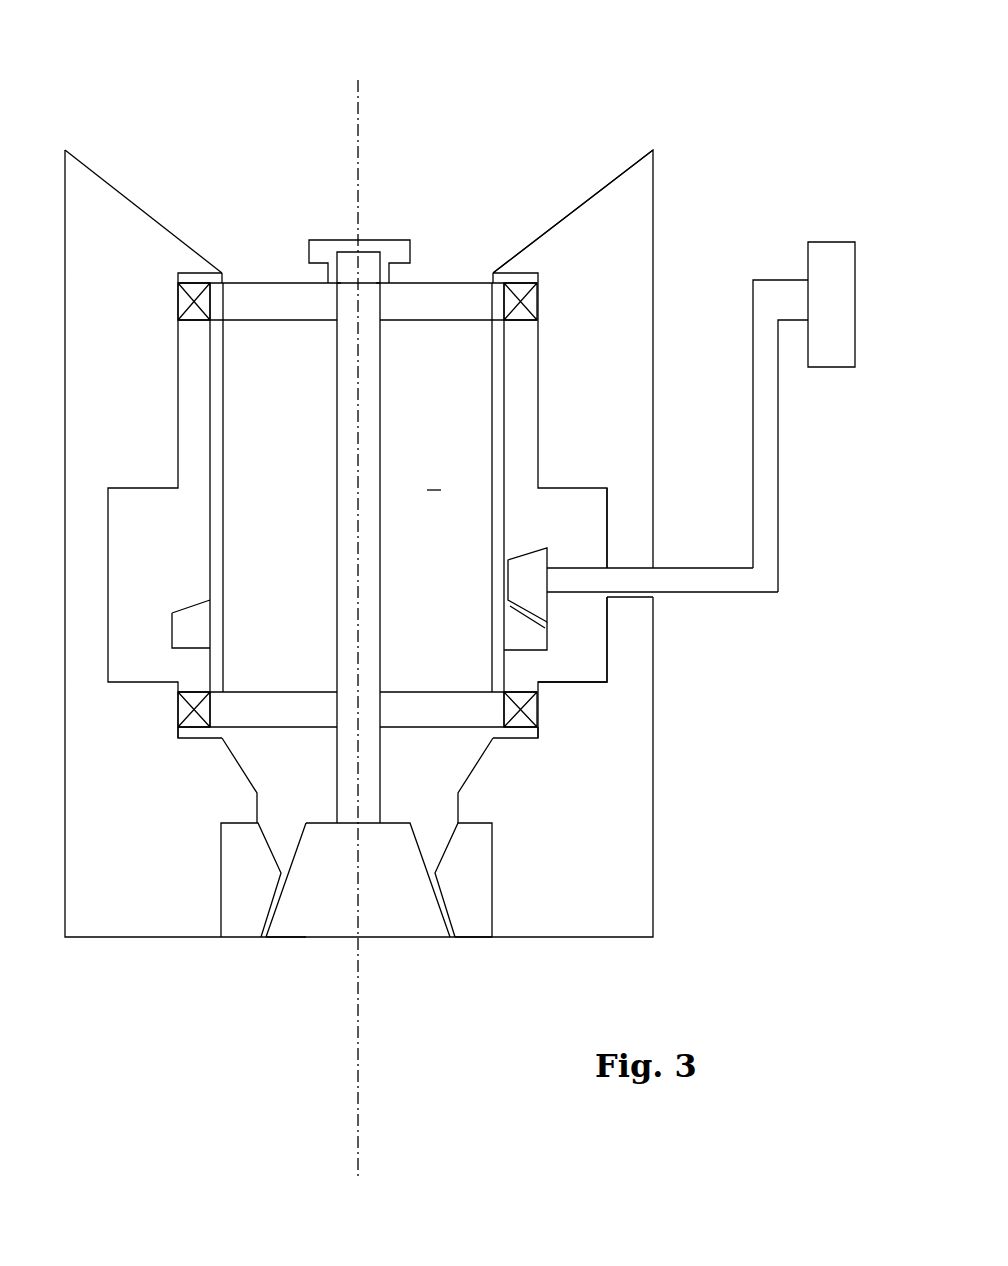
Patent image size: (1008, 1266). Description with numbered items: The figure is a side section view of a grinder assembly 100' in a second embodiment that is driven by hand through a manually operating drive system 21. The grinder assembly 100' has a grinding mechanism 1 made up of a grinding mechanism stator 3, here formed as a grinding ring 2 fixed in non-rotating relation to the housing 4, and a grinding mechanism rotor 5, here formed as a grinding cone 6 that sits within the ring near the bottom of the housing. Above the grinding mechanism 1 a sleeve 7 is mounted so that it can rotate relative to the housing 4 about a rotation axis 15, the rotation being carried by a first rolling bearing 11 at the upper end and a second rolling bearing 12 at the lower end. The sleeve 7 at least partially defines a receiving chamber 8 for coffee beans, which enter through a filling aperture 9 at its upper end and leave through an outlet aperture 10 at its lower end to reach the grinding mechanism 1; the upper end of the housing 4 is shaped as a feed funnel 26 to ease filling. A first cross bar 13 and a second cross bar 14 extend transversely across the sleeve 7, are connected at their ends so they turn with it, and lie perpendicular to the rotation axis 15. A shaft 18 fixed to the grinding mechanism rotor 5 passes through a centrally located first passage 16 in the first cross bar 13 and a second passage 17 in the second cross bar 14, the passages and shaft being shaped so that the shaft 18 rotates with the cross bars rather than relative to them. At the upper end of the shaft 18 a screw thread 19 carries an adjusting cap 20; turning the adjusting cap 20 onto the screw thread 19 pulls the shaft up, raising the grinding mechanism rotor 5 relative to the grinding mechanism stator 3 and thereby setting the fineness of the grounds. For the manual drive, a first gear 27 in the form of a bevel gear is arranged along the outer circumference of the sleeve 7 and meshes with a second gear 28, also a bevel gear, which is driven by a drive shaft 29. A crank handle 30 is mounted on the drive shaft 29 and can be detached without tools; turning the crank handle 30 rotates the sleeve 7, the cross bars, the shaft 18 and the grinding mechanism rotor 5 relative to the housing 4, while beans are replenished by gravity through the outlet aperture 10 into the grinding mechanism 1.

The grinding mechanism 1 is at (177, 880).
The grinding ring 2 is at (477, 918).
The grinding mechanism stator 3 is at (480, 990).
The housing 4 is at (630, 763).
The grinding mechanism rotor 5 is at (303, 963).
The grinding cone 6 is at (325, 923).
The sleeve 7 is at (220, 423).
The receiving chamber 8 is at (434, 479).
The filling aperture 9 is at (445, 245).
The outlet aperture 10 is at (407, 750).
The first rolling bearing 11 is at (508, 265).
The second rolling bearing 12 is at (515, 742).
The first cross bar 13 is at (427, 303).
The second cross bar 14 is at (424, 710).
The rotation axis 15 is at (360, 148).
The first passage 16 is at (327, 331).
The second passage 17 is at (325, 682).
The shaft 18 is at (372, 552).
The screw thread 19 is at (388, 258).
The adjusting cap 20 is at (327, 247).
The manually operating drive system 21 is at (730, 655).
The feed funnel 26 is at (130, 105).
The first gear 27 is at (528, 630).
The second gear 28 is at (522, 552).
The drive shaft 29 is at (695, 585).
The crank handle 30 is at (808, 490).
The grinder assembly 100' is at (667, 169).